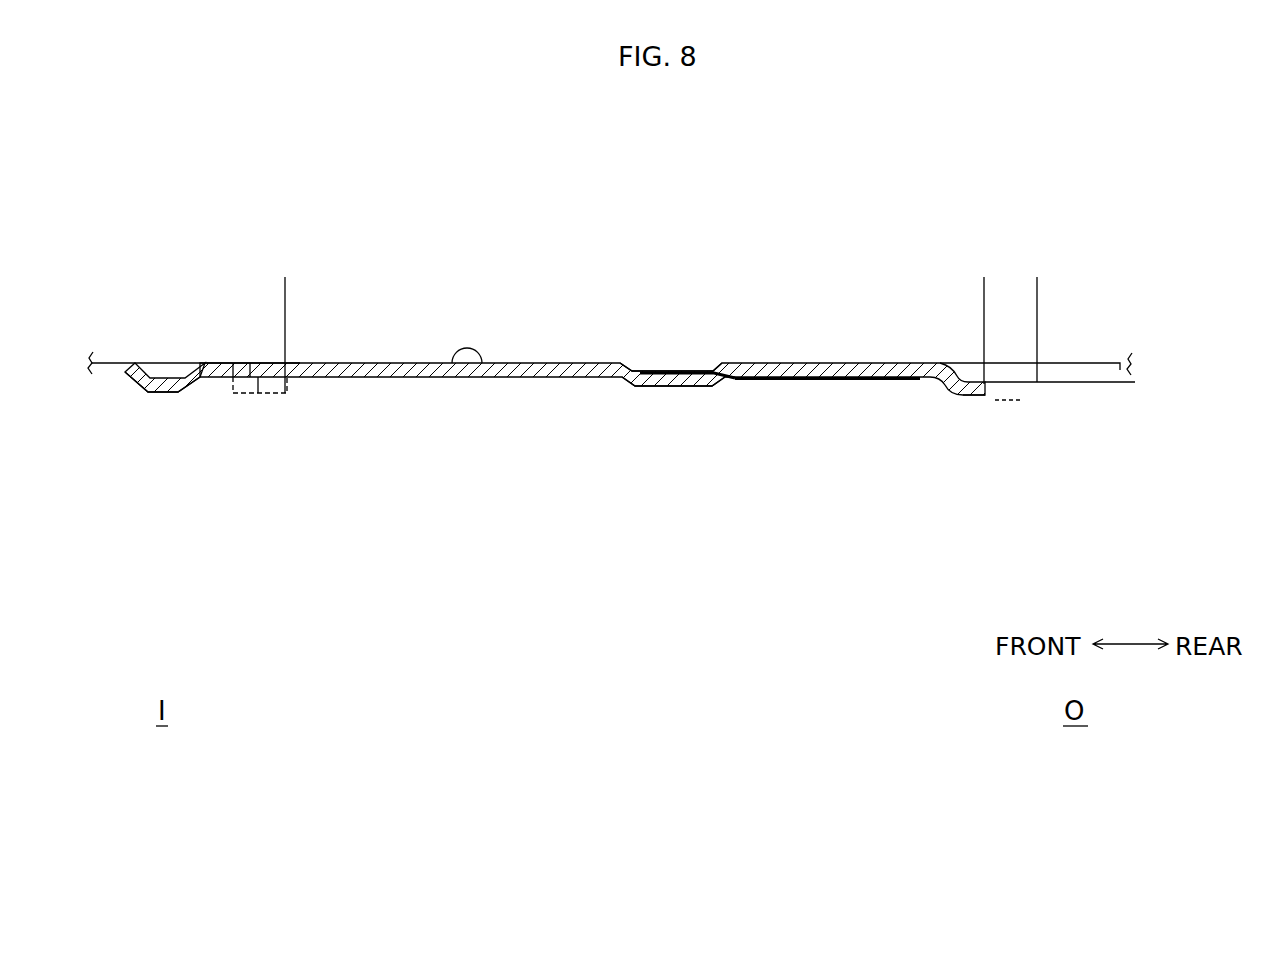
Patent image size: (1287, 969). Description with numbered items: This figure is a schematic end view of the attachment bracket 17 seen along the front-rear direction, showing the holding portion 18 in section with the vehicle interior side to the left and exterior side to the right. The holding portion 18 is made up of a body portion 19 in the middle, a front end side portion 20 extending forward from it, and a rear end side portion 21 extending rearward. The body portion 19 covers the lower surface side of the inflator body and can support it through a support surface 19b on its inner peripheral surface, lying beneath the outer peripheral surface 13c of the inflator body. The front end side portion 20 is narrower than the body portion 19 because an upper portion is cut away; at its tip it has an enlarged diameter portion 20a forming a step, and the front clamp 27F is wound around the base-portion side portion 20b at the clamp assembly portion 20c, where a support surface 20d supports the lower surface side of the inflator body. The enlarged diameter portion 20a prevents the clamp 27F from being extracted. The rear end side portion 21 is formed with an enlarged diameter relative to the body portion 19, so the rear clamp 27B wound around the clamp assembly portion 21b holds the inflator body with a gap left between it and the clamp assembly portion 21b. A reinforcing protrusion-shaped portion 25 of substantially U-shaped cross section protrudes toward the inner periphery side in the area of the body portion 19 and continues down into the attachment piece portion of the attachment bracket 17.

The attachment bracket 17 is at (918, 489).
The holding portion 18 is at (826, 392).
The body portion 19 is at (762, 386).
The support surface 19b is at (481, 366).
The front end side portion 20 is at (272, 386).
The enlarged diameter portion 20a is at (168, 393).
The base-portion side portion 20b is at (300, 355).
The clamp assembly portion 20c is at (258, 393).
The support surface 20d is at (250, 352).
The rear end side portion 21 is at (1012, 399).
The clamp assembly portion 21b is at (1033, 405).
The protrusion-shaped portion 25 is at (672, 392).
The clamp 27F is at (286, 300).
The clamp 27B is at (1038, 298).
The outer peripheral surface 13c is at (1120, 386).